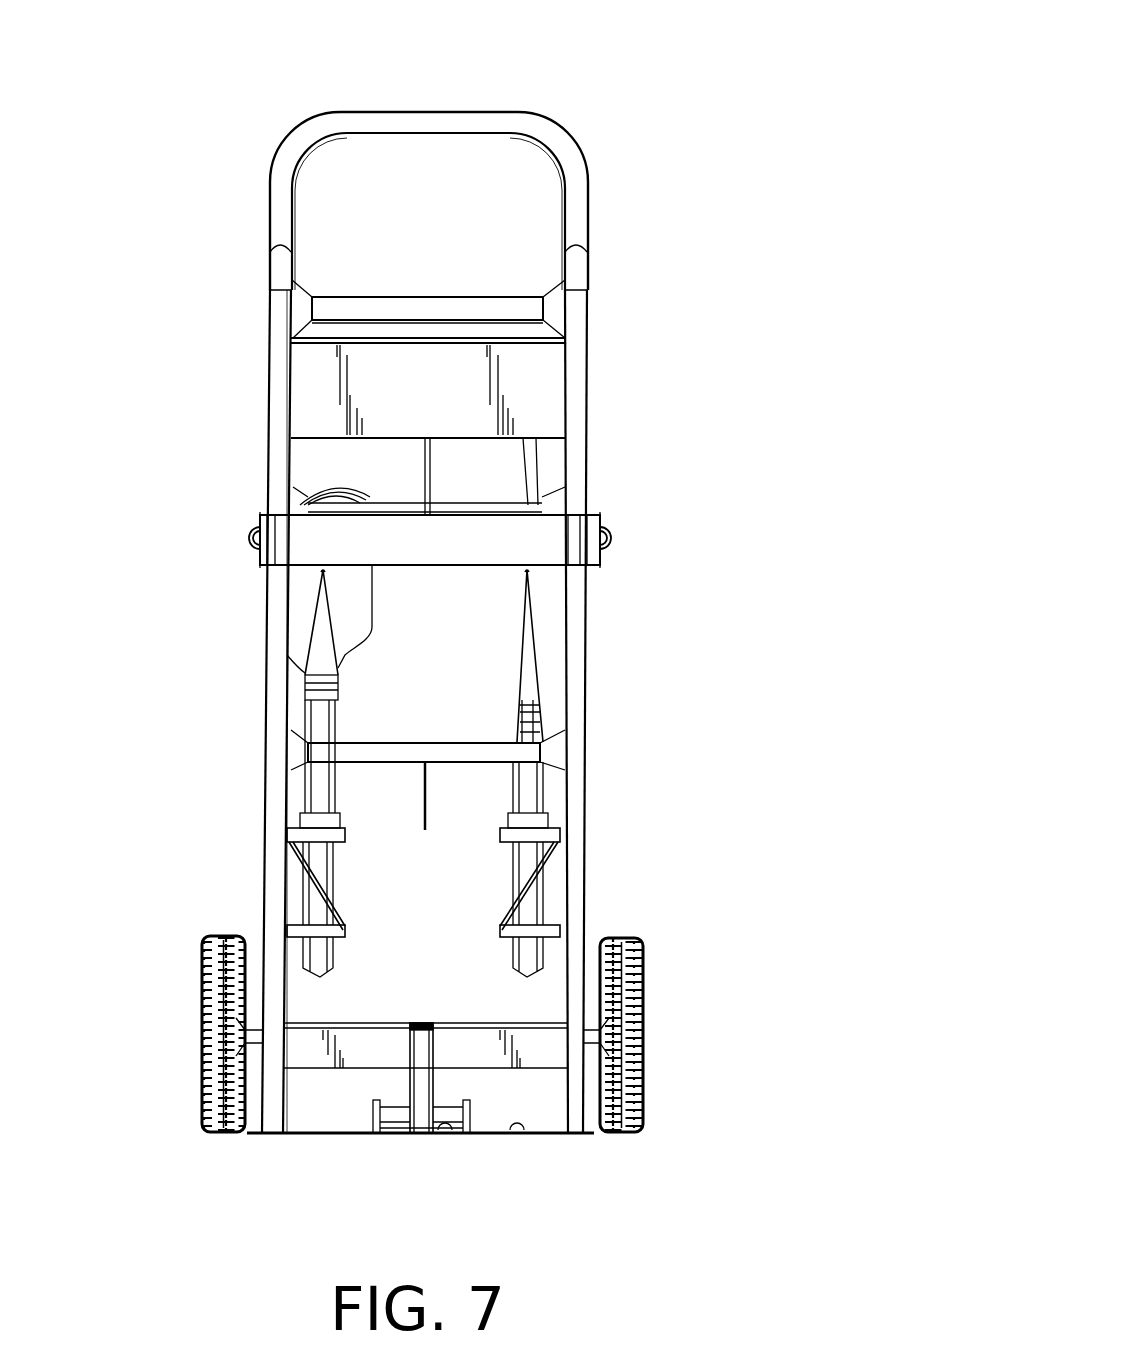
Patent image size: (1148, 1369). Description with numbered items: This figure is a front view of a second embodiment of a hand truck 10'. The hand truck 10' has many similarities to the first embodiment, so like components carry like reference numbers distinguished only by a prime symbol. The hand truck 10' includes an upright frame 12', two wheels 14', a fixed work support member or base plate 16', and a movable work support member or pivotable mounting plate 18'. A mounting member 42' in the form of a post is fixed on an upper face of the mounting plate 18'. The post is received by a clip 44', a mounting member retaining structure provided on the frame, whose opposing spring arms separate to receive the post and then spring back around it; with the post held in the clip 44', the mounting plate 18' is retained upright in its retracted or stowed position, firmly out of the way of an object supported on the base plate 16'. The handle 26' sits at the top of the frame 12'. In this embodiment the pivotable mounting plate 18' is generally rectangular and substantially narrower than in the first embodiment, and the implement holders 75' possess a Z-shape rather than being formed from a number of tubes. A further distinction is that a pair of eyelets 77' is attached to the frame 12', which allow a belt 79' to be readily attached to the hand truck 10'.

The hand truck 10' is at (513, 591).
The upright frame 12' is at (497, 689).
The wheels 14' is at (455, 999).
The base plate 16' is at (446, 1153).
The pivotable mounting plate 18' is at (414, 1141).
The handle 26' is at (429, 145).
The mounting member 42' is at (342, 1103).
The clip 44' is at (403, 985).
The implement holders 75' is at (423, 773).
The eyelets 77' is at (461, 511).
The belt 79' is at (461, 502).